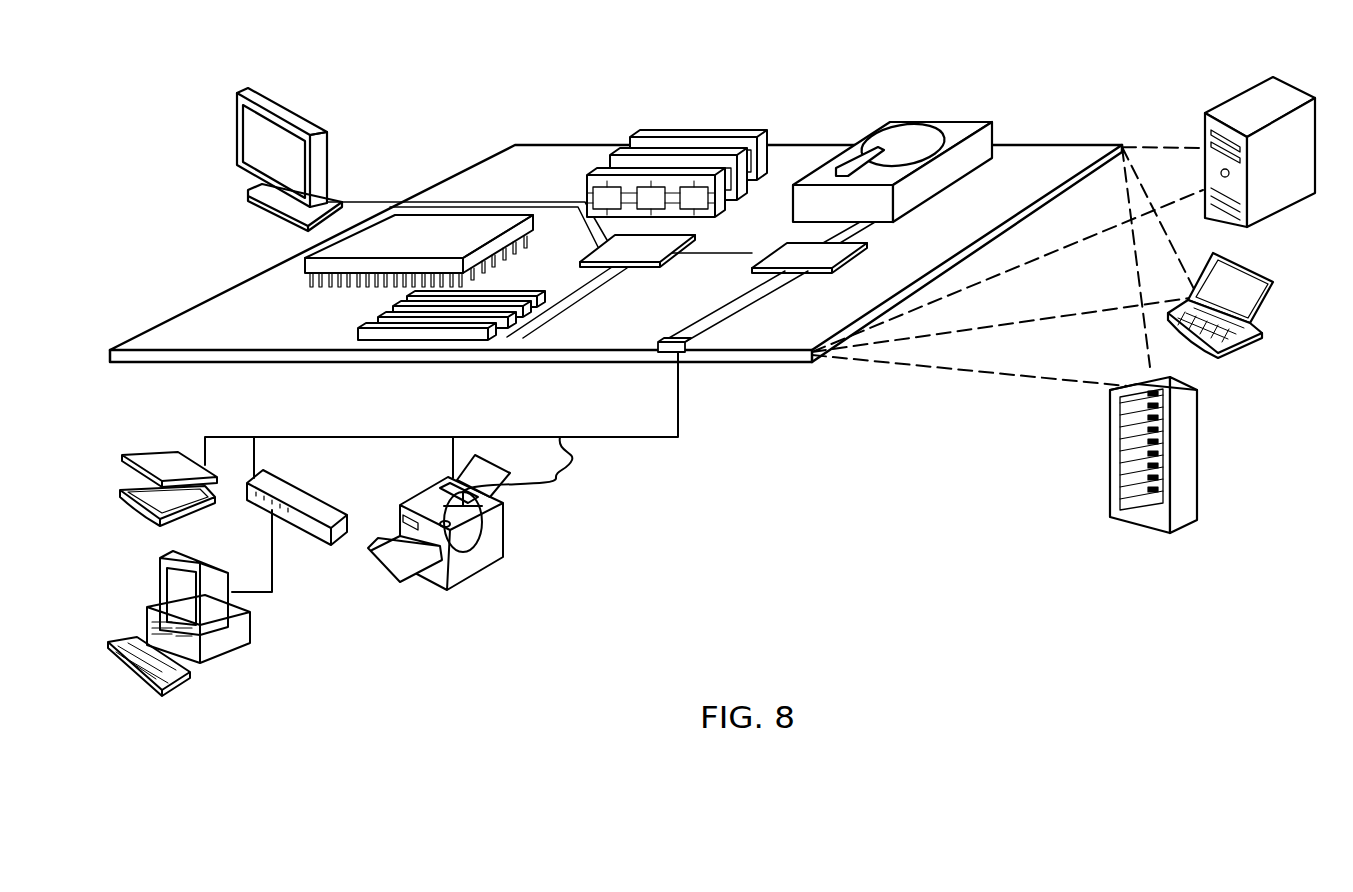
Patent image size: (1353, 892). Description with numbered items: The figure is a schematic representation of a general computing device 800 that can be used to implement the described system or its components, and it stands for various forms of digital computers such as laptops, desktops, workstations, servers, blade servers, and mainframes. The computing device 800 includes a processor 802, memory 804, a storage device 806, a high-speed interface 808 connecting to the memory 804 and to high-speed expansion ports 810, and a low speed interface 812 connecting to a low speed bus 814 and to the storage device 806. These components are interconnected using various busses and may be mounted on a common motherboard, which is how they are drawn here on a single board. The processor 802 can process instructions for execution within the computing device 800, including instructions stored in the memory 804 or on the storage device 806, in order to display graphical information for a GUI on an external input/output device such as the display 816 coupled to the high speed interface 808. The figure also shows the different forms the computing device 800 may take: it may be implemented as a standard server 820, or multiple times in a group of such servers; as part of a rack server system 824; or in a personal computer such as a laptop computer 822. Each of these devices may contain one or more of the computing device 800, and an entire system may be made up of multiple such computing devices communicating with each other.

The computing device 800 is at (428, 116).
The processor 802 is at (313, 263).
The memory 804 is at (652, 135).
The storage device 806 is at (888, 122).
The high-speed interface 808 is at (612, 247).
The high-speed expansion ports 810 is at (383, 322).
The low speed interface 812 is at (790, 250).
The low speed bus 814 is at (686, 350).
The display 816 is at (243, 93).
The standard server 820 is at (1205, 130).
The laptop computer 822 is at (1273, 282).
The rack server system 824 is at (1110, 478).